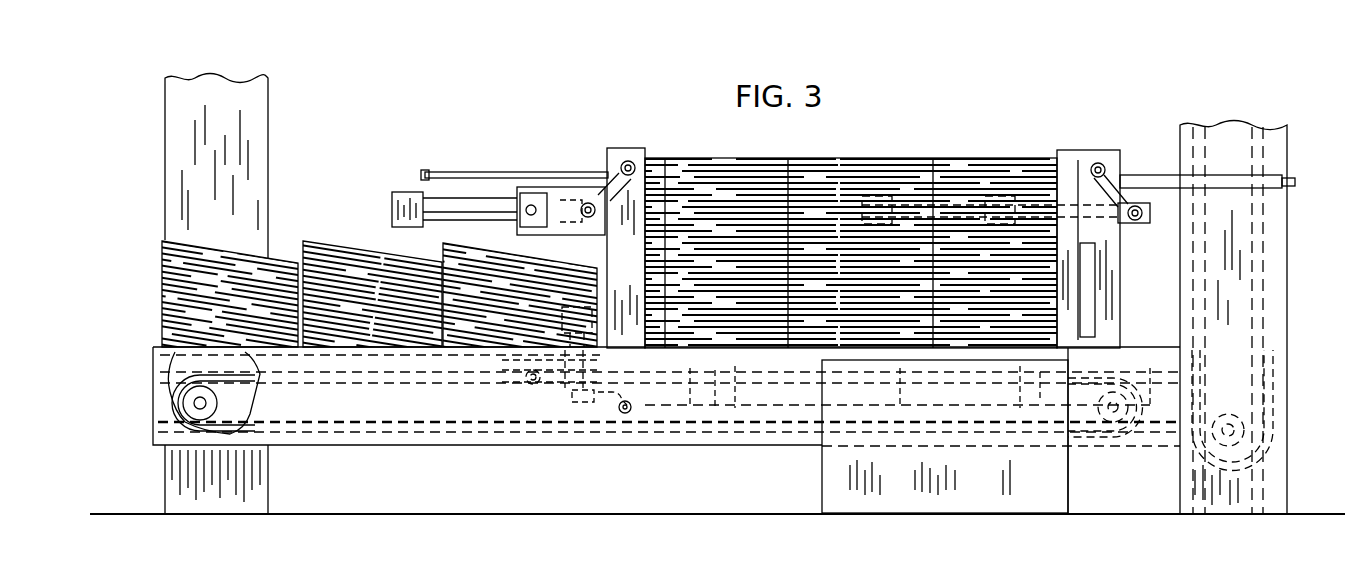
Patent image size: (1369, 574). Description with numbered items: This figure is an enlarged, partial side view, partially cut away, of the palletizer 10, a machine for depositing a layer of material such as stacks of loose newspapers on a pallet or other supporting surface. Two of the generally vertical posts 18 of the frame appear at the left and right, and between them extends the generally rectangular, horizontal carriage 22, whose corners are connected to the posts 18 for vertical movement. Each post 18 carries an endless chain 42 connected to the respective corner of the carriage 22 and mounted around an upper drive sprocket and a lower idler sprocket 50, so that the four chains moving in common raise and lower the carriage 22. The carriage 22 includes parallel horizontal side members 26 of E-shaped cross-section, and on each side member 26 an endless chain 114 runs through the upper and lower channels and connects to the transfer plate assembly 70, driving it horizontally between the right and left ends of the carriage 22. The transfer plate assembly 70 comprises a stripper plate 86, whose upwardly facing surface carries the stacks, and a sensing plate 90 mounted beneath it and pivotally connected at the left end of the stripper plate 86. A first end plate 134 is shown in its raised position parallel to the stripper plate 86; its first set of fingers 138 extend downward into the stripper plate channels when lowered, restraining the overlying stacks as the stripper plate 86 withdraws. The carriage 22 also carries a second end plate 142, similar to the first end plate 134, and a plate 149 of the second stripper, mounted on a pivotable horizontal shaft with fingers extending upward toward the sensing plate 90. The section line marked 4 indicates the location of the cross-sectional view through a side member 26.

The palletizer 10 is at (147, 98).
The post 18 is at (178, 140).
The carriage 22 is at (1157, 358).
The side member 26 is at (778, 446).
The endless chain 42 is at (1260, 262).
The lower idler sprocket 50 is at (1258, 432).
The transfer plate assembly 70 is at (472, 382).
The stripper plate 86 is at (540, 347).
The sensing plate 90 is at (406, 377).
The endless chain 114 is at (357, 433).
The first end plate 134 is at (518, 172).
The first set of fingers 138 is at (425, 170).
The second end plate 142 is at (1142, 175).
The plate 149 is at (603, 397).
The section line 4- 4 is at (635, 462).